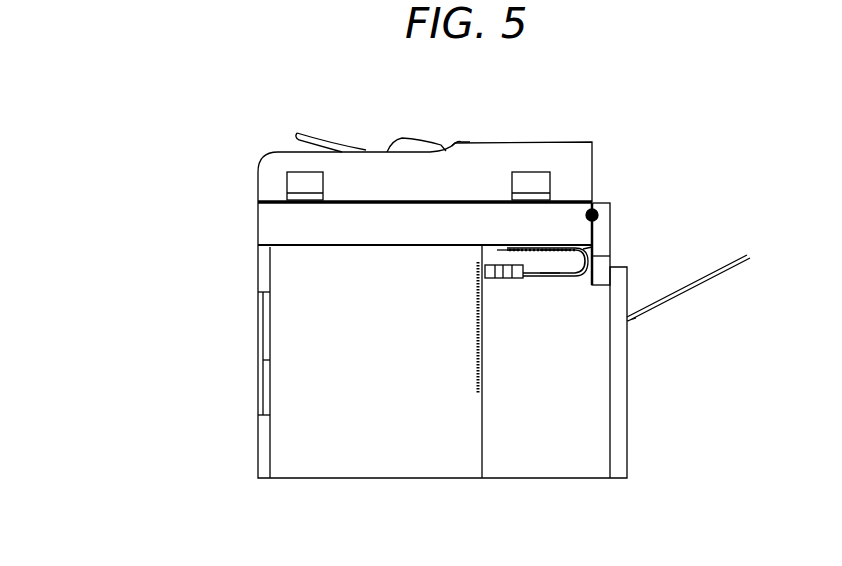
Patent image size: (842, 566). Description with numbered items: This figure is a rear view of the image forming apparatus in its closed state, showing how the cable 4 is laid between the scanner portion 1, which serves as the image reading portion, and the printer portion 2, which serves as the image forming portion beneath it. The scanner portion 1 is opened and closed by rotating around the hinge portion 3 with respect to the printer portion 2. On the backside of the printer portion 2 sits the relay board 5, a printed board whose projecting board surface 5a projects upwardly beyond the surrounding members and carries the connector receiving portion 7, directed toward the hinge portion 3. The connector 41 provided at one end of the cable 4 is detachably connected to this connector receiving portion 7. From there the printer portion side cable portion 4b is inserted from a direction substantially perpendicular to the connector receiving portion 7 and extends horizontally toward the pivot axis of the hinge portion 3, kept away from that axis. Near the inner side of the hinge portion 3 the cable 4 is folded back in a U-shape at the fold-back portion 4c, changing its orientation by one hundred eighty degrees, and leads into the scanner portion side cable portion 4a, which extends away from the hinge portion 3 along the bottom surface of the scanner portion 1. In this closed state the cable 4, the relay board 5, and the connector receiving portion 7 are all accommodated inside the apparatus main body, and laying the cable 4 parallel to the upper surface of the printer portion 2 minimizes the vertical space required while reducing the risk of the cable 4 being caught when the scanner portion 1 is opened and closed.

The scanner portion 1 is at (462, 126).
The printer portion 2 is at (242, 276).
The hinge portion 3 is at (600, 214).
The cable 4 is at (598, 246).
The scanner portion side cable portion 4a is at (596, 243).
The printer portion side cable portion 4b is at (547, 280).
The fold-back portion 4c is at (602, 256).
The connector 41 is at (552, 250).
The relay board 5 is at (478, 372).
The projecting board surface 5a is at (484, 262).
The connector receiving portion 7 is at (500, 250).